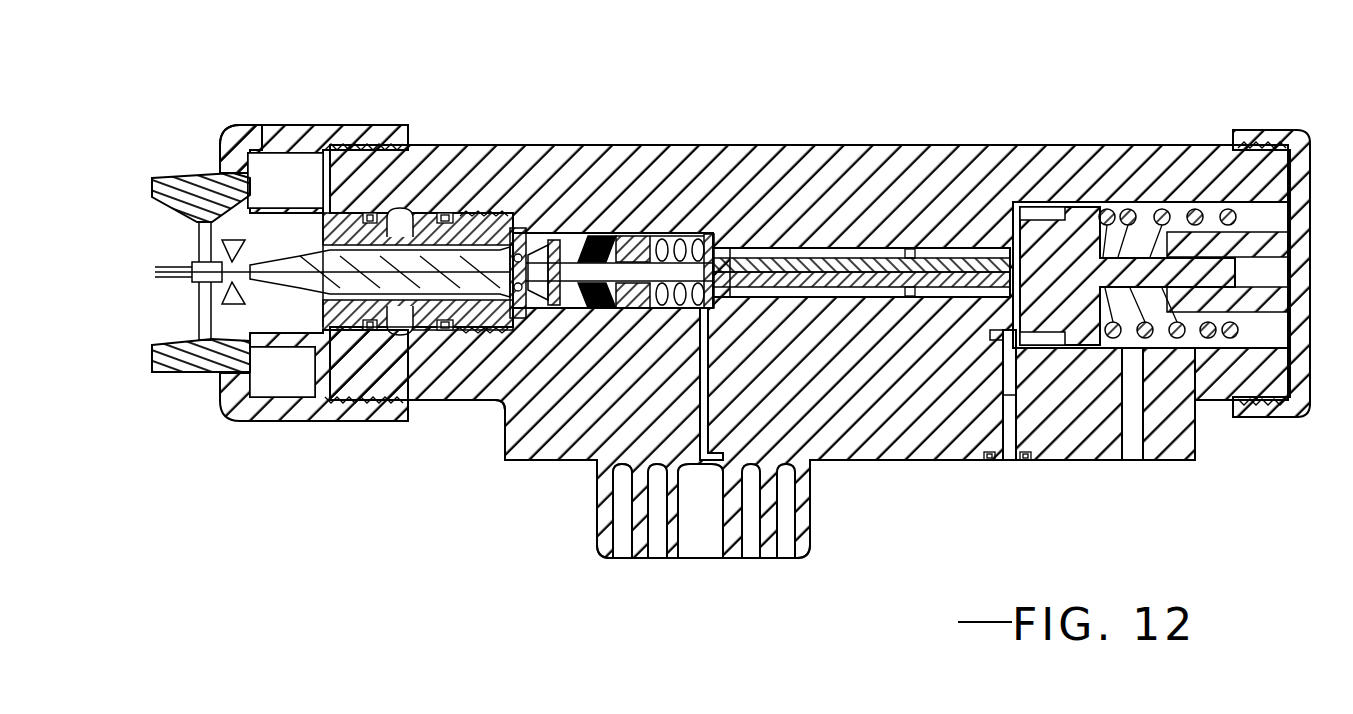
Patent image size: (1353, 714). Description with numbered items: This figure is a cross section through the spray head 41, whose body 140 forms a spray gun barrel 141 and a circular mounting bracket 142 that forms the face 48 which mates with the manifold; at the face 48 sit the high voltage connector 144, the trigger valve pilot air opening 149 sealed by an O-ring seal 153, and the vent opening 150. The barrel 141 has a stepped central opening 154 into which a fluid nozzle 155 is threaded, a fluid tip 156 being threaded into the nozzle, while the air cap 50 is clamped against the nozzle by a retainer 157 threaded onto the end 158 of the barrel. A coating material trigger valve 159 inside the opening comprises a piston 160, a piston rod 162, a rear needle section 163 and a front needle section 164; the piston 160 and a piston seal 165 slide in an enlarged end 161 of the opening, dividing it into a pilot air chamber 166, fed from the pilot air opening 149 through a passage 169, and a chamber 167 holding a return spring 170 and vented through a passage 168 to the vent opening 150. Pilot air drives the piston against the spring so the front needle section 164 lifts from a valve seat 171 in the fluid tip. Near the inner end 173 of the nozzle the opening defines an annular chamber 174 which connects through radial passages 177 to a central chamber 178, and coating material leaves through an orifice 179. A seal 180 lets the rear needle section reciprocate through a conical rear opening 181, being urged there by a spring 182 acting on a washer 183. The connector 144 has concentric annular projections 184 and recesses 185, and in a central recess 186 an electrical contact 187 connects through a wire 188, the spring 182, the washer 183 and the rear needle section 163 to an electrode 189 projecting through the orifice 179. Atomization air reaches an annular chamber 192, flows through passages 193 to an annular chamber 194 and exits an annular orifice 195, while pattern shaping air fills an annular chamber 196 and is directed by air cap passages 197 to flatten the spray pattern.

The spray head 41 is at (1247, 118).
The face 48 is at (893, 463).
The air cap 50 is at (152, 364).
The body 140 is at (825, 160).
The spray gun barrel 141 is at (438, 145).
The circular mounting bracket 142 is at (500, 443).
The high voltage connector 144 is at (812, 512).
The trigger valve pilot air opening 149 is at (1013, 463).
The vent opening 150 is at (1148, 445).
The O-ring seal 153 is at (993, 465).
The stepped central opening 154 is at (780, 240).
The fluid nozzle 155 is at (322, 335).
The fluid tip 156 is at (200, 230).
The retainer 157 is at (223, 412).
The end of the barrel 158 is at (327, 145).
The coating material trigger valve 159 is at (235, 265).
The piston 160 is at (1090, 210).
The enlarged end of the opening 161 is at (1173, 205).
The piston rod 162 is at (957, 240).
The rear needle section 163 is at (672, 235).
The front needle section 164 is at (482, 315).
The piston seal 165 is at (1053, 205).
The pilot air chamber 166 is at (990, 322).
The chamber 167 is at (1163, 340).
The passage 168 is at (1130, 450).
The passage 169 is at (1005, 394).
The return spring 170 is at (1232, 395).
The valve seat 171 is at (152, 336).
The inner end of the fluid nozzle 173 is at (513, 225).
The annular chamber 174 is at (496, 228).
The radial passages 177 is at (545, 305).
The central chamber 178 is at (498, 305).
The orifice 179 is at (205, 312).
The seal 180 is at (565, 233).
The conical rear opening 181 is at (568, 305).
The spring 182 is at (702, 235).
The washer 183 is at (650, 235).
The concentric annular projections 184 is at (745, 560).
The recesses 185 is at (660, 542).
The central recess 186 is at (677, 543).
The electrical contact 187 is at (713, 470).
The wire 188 is at (712, 378).
The electrode 189 is at (165, 277).
The annular chamber 192 is at (418, 328).
The passages 193 is at (355, 218).
The annular chamber 194 is at (258, 352).
The annular orifice 195 is at (203, 260).
The annular chamber 196 is at (265, 155).
The air cap passages 197 is at (200, 347).